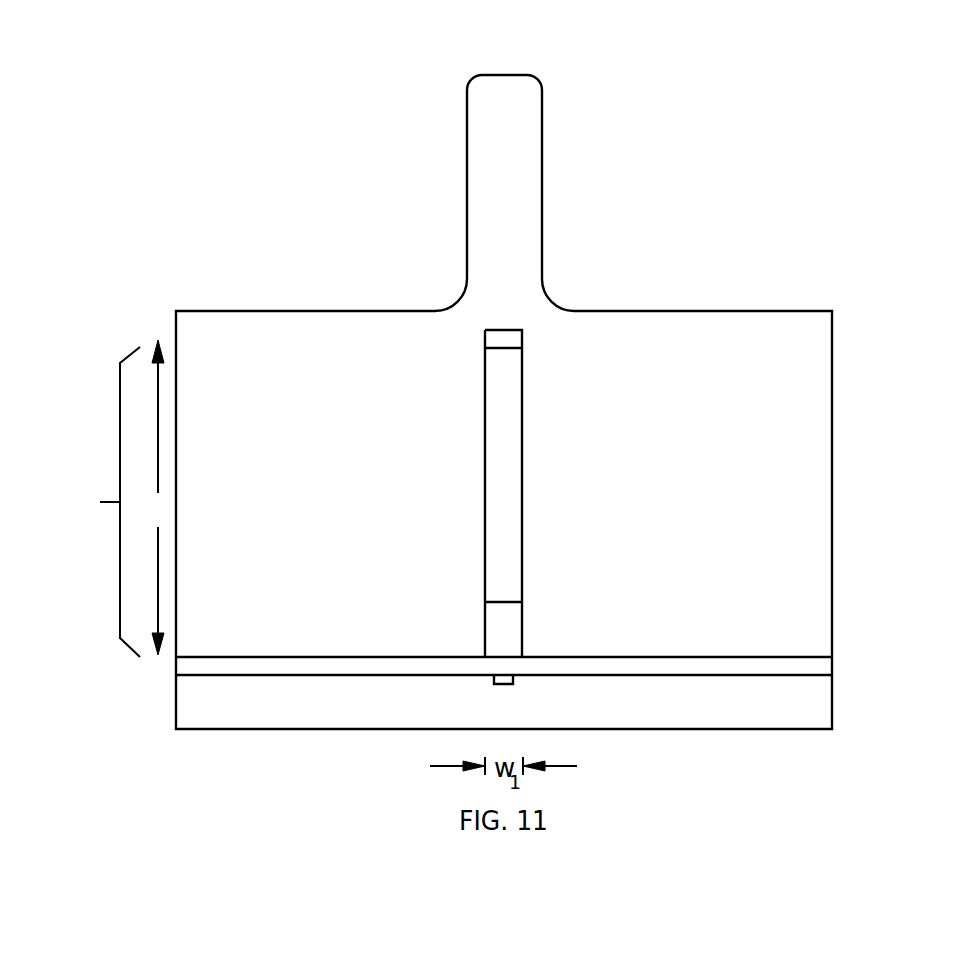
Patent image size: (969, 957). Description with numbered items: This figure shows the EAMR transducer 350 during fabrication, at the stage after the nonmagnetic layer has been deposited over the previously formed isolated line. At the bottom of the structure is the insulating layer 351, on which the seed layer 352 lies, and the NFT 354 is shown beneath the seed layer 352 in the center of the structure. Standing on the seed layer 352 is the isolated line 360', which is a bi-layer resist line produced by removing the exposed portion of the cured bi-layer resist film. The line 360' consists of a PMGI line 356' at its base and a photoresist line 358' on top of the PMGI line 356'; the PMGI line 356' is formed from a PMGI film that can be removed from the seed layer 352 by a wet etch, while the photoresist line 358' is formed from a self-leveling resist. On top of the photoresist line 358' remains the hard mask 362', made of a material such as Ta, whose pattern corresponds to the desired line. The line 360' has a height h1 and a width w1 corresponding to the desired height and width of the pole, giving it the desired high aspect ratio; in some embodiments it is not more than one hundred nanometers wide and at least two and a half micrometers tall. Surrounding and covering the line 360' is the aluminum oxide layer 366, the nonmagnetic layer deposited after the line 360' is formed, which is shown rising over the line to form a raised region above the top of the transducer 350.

The EAMR transducer 350 is at (527, 51).
The aluminum oxide layer 366 is at (305, 311).
The isolated line 360' is at (233, 498).
The photoresist line 358' is at (630, 451).
The hard mask 362' is at (571, 305).
The PMGI line 356' is at (690, 595).
The seed layer 352 is at (176, 665).
The insulating layer 351 is at (358, 729).
The NFT 354 is at (510, 684).